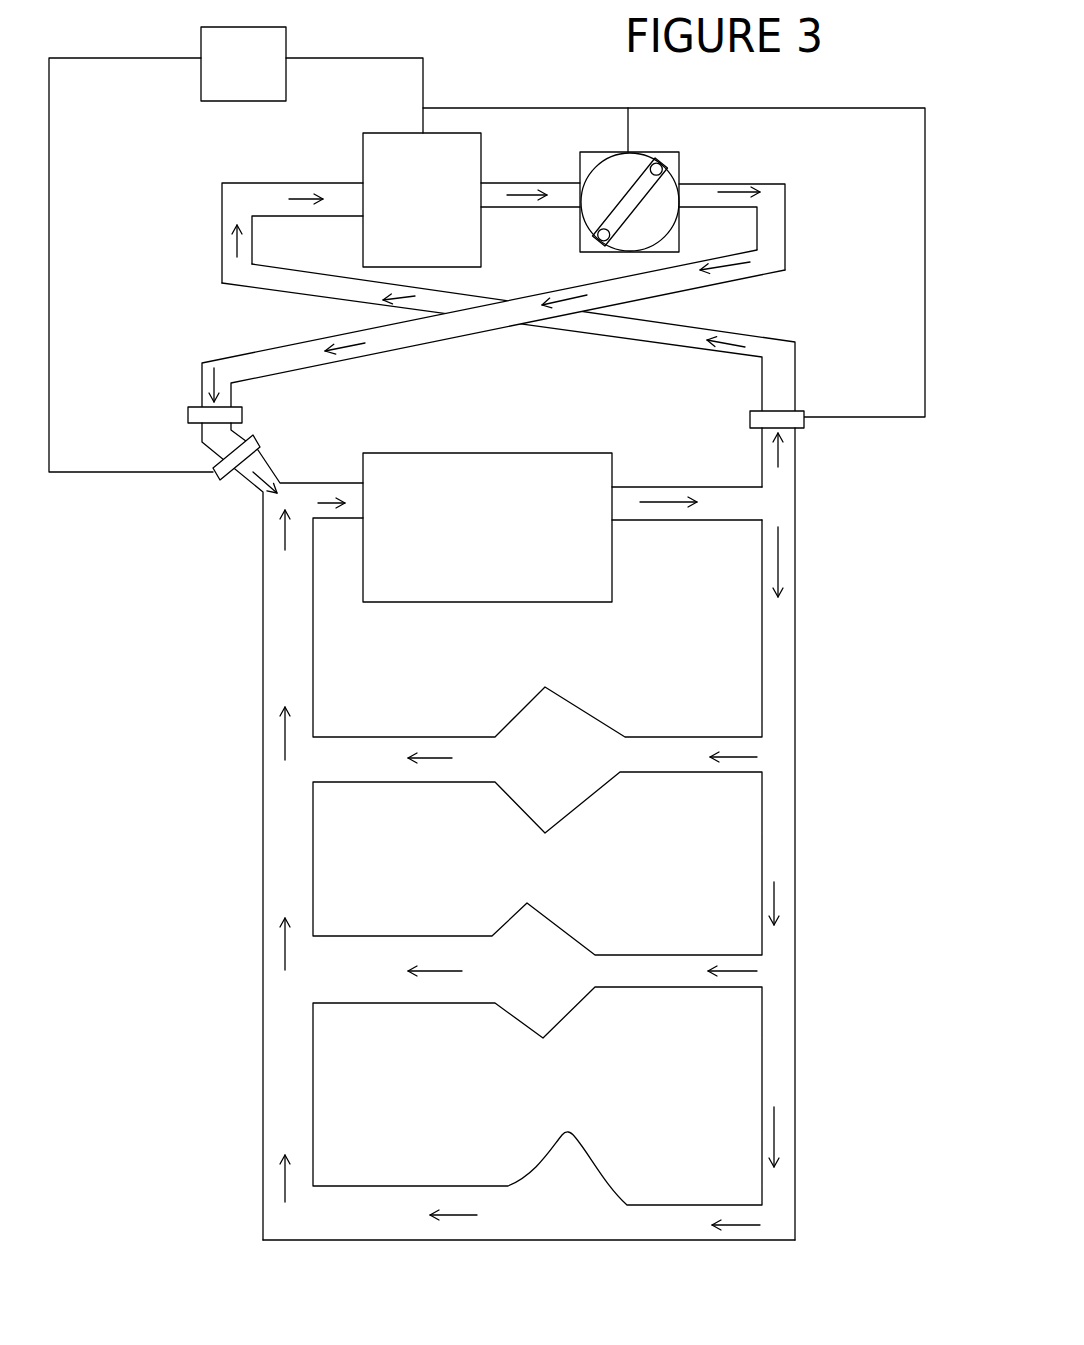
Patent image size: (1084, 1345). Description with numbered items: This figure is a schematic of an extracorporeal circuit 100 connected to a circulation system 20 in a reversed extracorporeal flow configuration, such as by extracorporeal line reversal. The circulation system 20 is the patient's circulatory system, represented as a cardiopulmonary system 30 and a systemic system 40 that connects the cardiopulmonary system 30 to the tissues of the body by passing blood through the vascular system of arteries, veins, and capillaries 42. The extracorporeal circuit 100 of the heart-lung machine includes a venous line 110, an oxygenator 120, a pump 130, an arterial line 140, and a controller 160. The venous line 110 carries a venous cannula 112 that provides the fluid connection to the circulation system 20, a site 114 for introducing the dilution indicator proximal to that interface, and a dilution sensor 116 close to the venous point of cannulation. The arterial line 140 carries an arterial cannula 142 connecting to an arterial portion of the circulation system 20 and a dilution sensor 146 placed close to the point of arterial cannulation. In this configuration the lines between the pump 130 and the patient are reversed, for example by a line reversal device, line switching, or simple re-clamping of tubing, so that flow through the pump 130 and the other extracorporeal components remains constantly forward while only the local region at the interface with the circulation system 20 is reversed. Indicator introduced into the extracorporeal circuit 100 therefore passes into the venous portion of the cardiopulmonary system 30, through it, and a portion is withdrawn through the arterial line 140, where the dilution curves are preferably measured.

The circulation system 20 is at (248, 723).
The cardiopulmonary system 30 is at (454, 536).
The systemic system 40 is at (797, 858).
The capillaries 42 is at (522, 775).
The extracorporeal circuit 100 is at (785, 217).
The venous line 110 is at (240, 357).
The venous cannula 112 is at (257, 493).
The site for introduction of the dilution indicator 114 is at (187, 407).
The dilution sensor 116 is at (210, 467).
The oxygenator 120 is at (388, 209).
The pump 130 is at (620, 250).
The arterial line 140 is at (797, 365).
The arterial cannula 142 is at (795, 473).
The dilution sensor 146 is at (805, 411).
The controller 160 is at (262, 65).